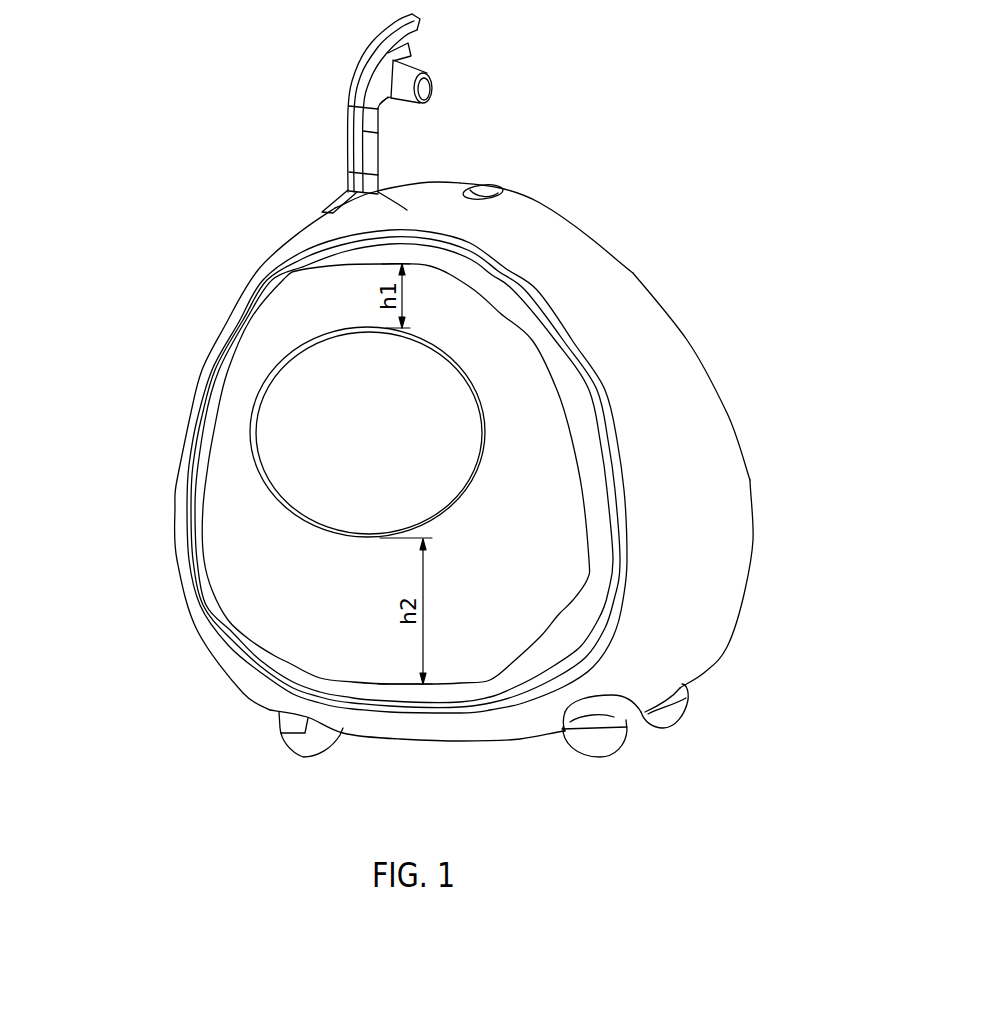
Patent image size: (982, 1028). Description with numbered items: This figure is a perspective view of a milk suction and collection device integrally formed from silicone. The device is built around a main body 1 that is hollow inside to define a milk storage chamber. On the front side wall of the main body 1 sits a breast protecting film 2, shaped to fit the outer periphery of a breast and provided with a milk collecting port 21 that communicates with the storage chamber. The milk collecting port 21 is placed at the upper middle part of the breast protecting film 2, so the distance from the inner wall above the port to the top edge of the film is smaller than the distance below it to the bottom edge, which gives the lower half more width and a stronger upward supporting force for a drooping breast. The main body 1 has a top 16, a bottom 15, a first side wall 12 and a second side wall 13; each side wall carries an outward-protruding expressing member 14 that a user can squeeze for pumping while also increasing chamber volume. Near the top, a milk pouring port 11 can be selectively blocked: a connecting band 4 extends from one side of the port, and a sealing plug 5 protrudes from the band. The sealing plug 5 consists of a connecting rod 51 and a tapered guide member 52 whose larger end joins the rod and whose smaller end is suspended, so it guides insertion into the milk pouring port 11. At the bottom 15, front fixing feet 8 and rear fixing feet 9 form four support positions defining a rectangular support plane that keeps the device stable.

The main body 1 is at (632, 271).
The breast protecting film 2 is at (300, 607).
The connecting band 4 is at (347, 137).
The sealing plug 5 is at (449, 63).
The connecting rod 51 is at (408, 44).
The tapered guide member 52 is at (413, 80).
The front fixing feet 8 is at (600, 742).
The rear fixing feet 9 is at (670, 718).
The milk pouring port 11 is at (485, 193).
The first side wall 12 is at (193, 399).
The second side wall 13 is at (650, 353).
The expressing member 14 is at (710, 527).
The bottom 15 is at (447, 735).
The top 16 is at (336, 201).
The milk collecting port 21 is at (287, 400).